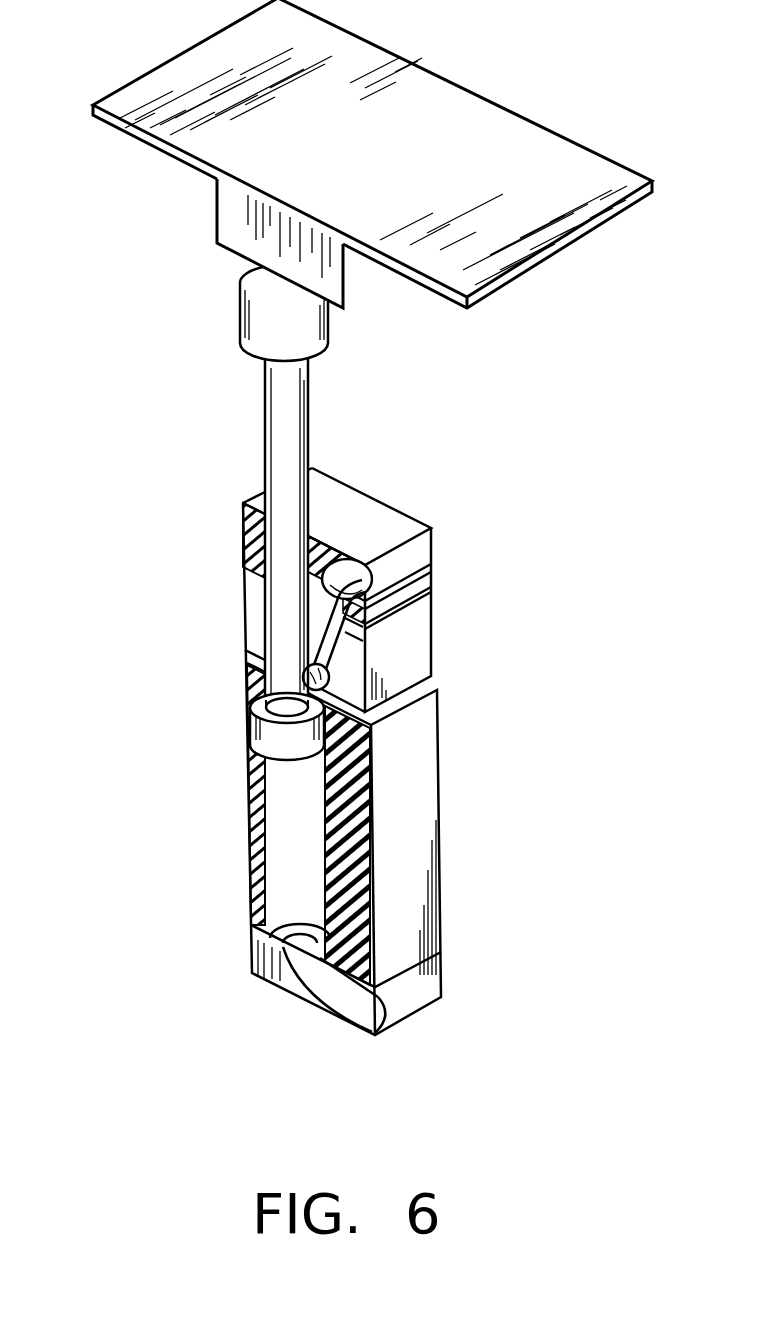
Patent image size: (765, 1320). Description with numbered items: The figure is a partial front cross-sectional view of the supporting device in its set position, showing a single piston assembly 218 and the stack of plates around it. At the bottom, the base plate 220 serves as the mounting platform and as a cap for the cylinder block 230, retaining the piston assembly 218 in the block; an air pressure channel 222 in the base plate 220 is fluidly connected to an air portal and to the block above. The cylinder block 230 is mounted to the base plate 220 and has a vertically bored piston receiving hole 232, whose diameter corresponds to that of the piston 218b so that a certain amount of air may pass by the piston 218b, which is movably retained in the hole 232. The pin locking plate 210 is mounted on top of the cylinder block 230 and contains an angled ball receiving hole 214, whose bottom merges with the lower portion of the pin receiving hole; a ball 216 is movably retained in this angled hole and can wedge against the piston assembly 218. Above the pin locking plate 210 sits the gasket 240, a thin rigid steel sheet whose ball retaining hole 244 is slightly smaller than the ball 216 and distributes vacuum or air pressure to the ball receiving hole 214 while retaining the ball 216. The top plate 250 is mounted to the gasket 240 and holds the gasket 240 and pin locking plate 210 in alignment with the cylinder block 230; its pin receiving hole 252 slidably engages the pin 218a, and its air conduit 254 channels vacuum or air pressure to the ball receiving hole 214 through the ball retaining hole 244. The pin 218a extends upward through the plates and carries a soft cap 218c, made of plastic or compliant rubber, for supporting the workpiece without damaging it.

The pin locking plate 210 is at (422, 664).
The ball receiving holes 214 is at (386, 664).
The balls 216 is at (254, 689).
The piston assemblies 218 is at (193, 552).
The pin 218a is at (265, 443).
The piston 218b is at (292, 755).
The cap 218c is at (242, 322).
The base plate 220 is at (408, 1000).
The air pressure channel 222 is at (338, 995).
The cylinder block 230 is at (422, 825).
The piston receiving holes 232 is at (264, 890).
The gasket 240 is at (405, 601).
The ball retaining holes 244 is at (332, 598).
The top plate 250 is at (388, 510).
The pin receiving holes 252 is at (246, 537).
The air conduit 254 is at (373, 590).